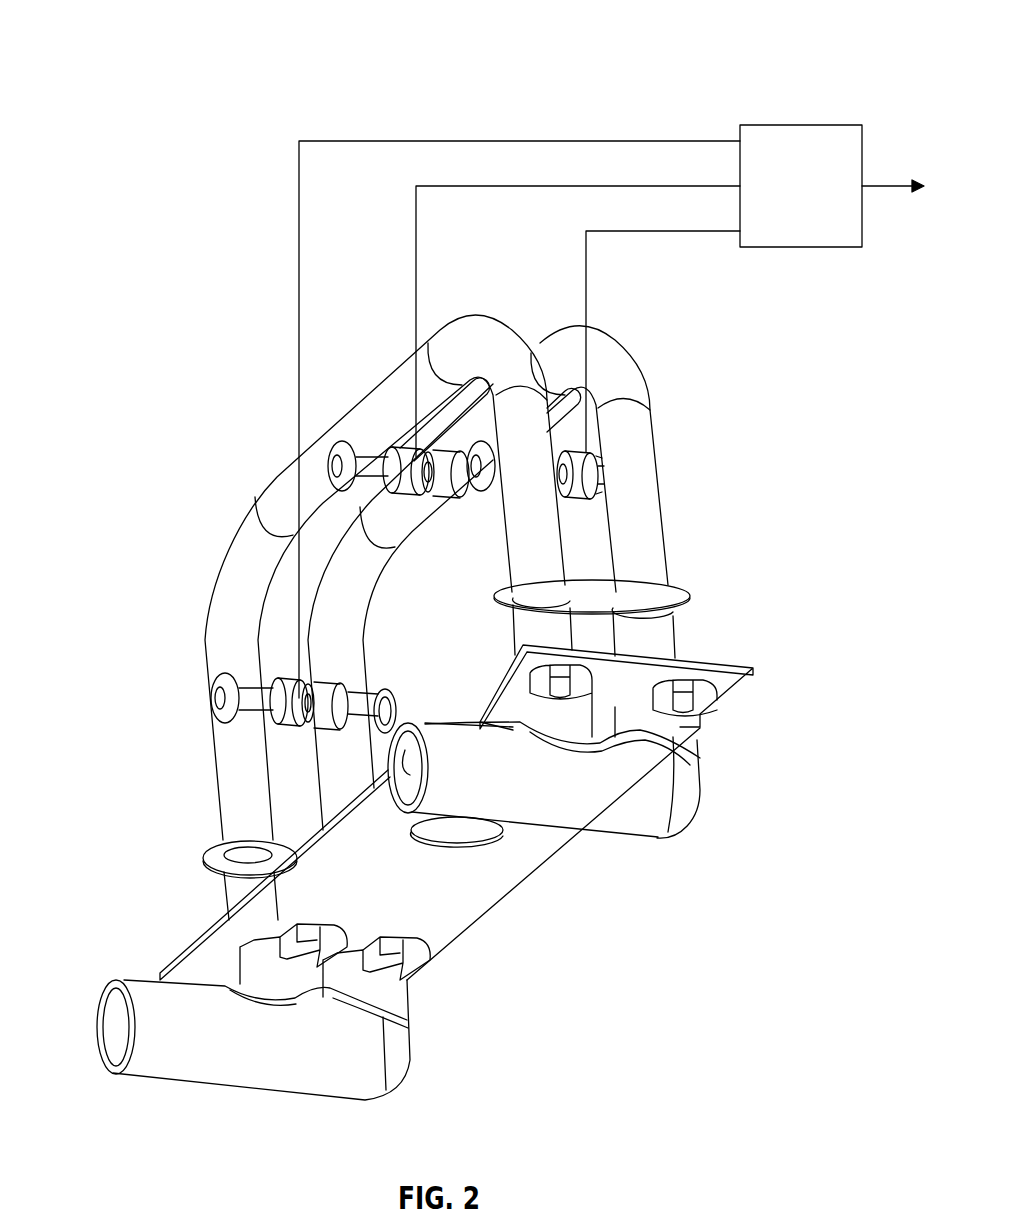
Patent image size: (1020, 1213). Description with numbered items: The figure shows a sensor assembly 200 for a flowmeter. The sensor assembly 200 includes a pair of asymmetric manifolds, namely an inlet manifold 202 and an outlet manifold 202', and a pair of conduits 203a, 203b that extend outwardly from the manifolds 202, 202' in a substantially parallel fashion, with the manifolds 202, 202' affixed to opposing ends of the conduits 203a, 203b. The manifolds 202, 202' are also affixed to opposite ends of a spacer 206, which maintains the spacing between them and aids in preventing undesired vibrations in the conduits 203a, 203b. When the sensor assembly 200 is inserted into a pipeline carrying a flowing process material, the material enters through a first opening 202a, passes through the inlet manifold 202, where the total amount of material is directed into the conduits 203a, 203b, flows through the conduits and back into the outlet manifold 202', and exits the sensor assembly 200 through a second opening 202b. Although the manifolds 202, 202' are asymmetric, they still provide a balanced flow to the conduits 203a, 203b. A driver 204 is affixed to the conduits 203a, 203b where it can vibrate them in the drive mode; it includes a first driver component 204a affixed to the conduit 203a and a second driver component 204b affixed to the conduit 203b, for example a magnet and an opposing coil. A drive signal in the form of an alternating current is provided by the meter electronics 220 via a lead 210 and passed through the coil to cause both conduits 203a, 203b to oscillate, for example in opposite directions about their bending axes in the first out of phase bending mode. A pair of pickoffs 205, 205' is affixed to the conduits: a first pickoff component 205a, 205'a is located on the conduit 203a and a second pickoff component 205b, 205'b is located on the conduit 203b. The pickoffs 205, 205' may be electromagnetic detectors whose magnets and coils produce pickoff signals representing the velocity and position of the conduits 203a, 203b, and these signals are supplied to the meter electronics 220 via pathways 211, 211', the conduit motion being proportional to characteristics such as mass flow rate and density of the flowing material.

The sensor assembly 200 is at (119, 44).
The inlet manifold 202 is at (271, 994).
The outlet manifold 202' is at (552, 782).
The first opening 202a is at (118, 1027).
The second opening 202b is at (407, 760).
The conduit 203a is at (383, 392).
The conduit 203b is at (552, 347).
The driver 204 is at (330, 458).
The first driver component 204a is at (412, 497).
The second driver component 204b is at (450, 475).
The pickoff 205 is at (198, 707).
The first pickoff component 205a is at (263, 722).
The second pickoff component 205b is at (340, 690).
The pickoff 205' is at (640, 459).
The first pickoff component 205'a is at (681, 415).
The second pickoff component 205'b is at (667, 510).
The spacer 206 is at (500, 888).
The lead 210 is at (415, 240).
The pathway 211 is at (519, 384).
The pathway 211' is at (663, 341).
The meter electronics 220 is at (822, 198).